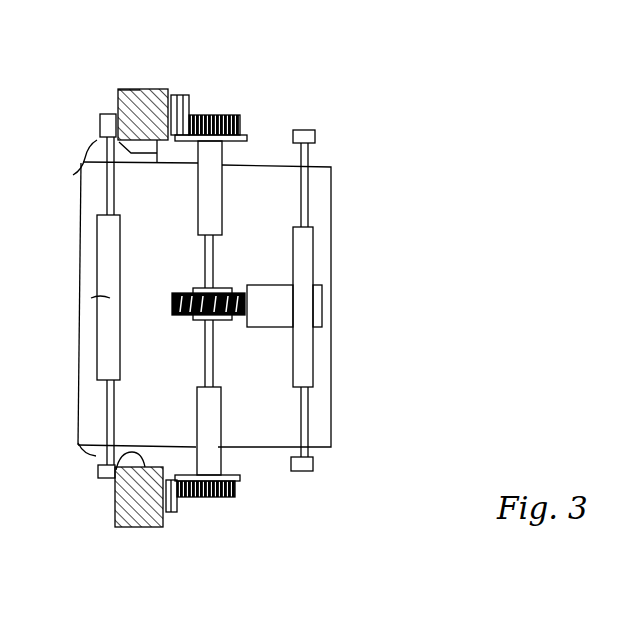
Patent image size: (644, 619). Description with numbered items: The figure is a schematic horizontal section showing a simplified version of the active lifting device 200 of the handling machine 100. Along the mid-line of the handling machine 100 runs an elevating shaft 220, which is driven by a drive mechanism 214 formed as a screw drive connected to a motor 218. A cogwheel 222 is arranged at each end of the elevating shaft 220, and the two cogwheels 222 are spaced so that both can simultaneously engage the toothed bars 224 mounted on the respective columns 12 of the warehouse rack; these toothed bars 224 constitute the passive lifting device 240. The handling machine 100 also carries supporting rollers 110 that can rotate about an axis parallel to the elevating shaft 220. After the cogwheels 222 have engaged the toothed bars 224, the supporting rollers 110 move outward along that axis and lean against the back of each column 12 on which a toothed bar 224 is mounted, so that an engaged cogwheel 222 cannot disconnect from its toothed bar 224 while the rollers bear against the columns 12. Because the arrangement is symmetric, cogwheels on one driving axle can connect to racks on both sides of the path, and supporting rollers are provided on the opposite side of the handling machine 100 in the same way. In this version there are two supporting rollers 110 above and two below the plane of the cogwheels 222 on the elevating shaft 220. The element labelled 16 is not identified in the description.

The handling machine 100 is at (348, 287).
The supporting rollers 110 is at (100, 122).
The columns 12 is at (157, 142).
The bearing 16 is at (118, 90).
The active lifting device 200 is at (264, 93).
The drive mechanism 214 is at (247, 253).
The motor 218 is at (267, 316).
The elevating shaft 220 is at (205, 368).
The cogwheel 222 is at (214, 116).
The toothed bars 224 is at (184, 95).
The passive lifting device 240 is at (197, 68).